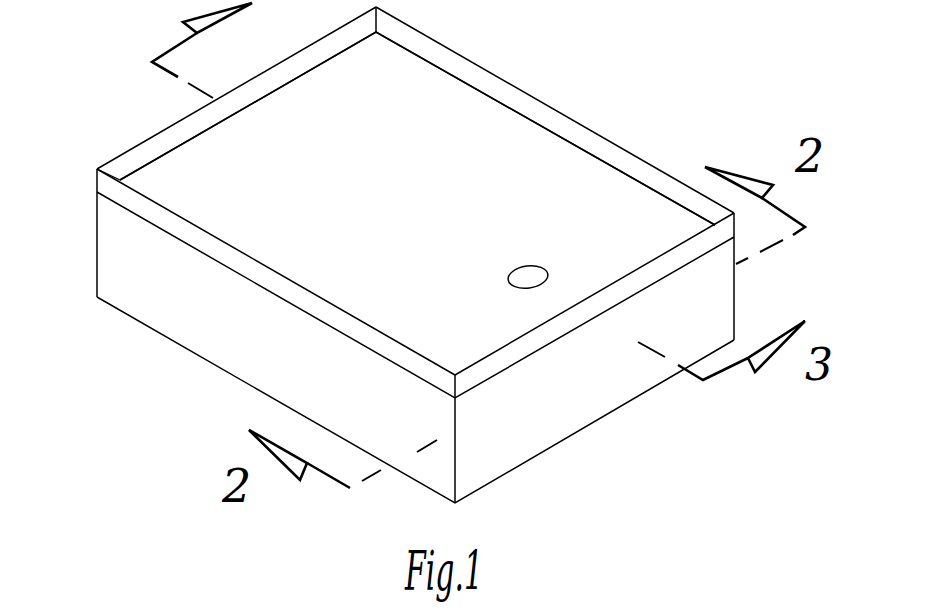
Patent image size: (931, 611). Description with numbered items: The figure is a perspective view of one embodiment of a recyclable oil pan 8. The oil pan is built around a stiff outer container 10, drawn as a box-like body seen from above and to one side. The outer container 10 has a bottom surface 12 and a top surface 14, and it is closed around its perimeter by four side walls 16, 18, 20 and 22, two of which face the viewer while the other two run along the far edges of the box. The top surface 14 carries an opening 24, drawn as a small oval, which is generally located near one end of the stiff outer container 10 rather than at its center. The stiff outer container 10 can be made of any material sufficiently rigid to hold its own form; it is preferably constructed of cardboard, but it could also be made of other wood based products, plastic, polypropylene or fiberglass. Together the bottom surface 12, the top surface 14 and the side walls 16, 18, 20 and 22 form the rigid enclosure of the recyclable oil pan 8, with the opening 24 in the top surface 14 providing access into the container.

The recyclable oil pan 8 is at (87, 66).
The stiff outer container 10 is at (437, 255).
The bottom surface 12 is at (595, 421).
The top surface 14 is at (445, 108).
The side wall 16 is at (223, 347).
The side wall 18 is at (583, 133).
The side wall 20 is at (713, 298).
The side wall 22 is at (174, 130).
The opening 24 is at (518, 273).